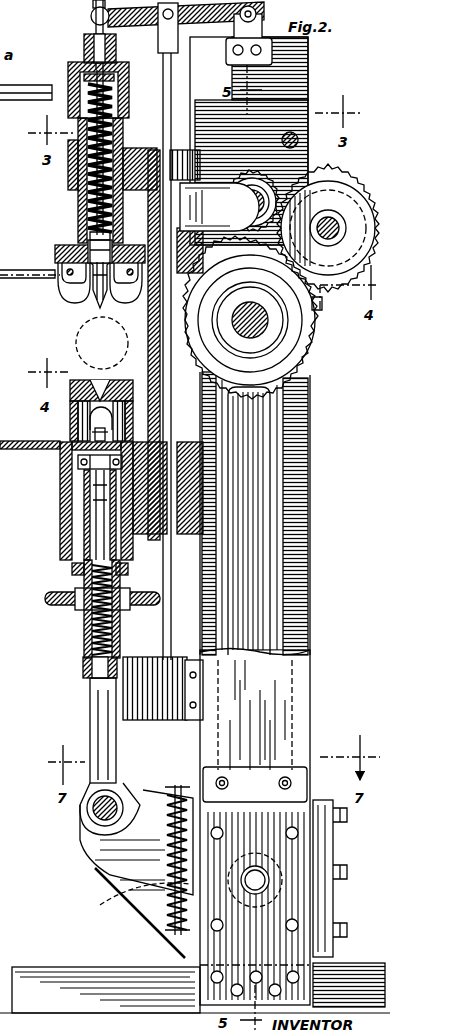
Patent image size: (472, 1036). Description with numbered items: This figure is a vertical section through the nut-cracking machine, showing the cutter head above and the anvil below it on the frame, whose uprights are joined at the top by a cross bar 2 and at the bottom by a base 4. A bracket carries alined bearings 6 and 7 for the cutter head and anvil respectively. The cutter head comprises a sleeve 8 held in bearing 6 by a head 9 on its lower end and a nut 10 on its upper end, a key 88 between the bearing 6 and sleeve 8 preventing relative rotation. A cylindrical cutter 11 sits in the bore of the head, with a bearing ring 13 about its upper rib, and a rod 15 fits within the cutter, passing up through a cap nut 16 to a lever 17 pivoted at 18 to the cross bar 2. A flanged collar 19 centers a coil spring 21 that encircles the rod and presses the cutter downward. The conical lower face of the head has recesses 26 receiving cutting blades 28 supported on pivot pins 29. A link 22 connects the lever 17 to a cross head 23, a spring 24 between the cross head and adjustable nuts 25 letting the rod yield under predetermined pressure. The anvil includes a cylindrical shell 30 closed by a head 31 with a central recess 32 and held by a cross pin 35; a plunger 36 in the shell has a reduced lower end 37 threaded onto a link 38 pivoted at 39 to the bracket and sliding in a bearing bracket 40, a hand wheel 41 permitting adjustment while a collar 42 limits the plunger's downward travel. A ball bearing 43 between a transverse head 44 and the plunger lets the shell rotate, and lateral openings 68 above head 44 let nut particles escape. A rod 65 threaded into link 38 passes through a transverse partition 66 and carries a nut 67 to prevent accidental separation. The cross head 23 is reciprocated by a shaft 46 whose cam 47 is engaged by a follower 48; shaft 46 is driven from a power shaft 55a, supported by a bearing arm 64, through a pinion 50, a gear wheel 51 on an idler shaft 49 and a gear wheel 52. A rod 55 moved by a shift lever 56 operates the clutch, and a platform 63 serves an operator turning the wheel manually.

The cross bar 2 is at (232, 44).
The base 4 is at (78, 975).
The bearing 6 is at (80, 195).
The bearing 7 is at (66, 505).
The sleeve 8 is at (136, 160).
The head 9 is at (88, 240).
The nut 10 is at (78, 168).
The cylindrical cutter 11 is at (95, 292).
The bearing ring 13 is at (88, 236).
The rod 15 is at (119, 52).
The cap nut 16 is at (90, 45).
The lever 17 is at (146, 22).
The pivot 18 is at (258, 14).
The flanged collar 19 is at (84, 72).
The coil spring 21 is at (118, 130).
The link 22 is at (166, 583).
The cross head 23 is at (108, 872).
The spring 24 is at (137, 903).
The adjustable stops or nuts 25 is at (165, 928).
The recesses 26 is at (58, 268).
The cutting blade 28 is at (80, 305).
The pivot pins 29 is at (90, 282).
The cylindrical shell 30 is at (70, 396).
The head 31 is at (78, 346).
The central recess 32 is at (102, 343).
The cross pin 35 is at (122, 352).
The plunger 36 is at (88, 484).
The reduced lower end 37 is at (85, 630).
The link 38 is at (78, 720).
The pivot 39 is at (96, 812).
The bearing bracket 40 is at (142, 660).
The hand wheel 41 is at (50, 600).
The collar 42 is at (72, 582).
The ball bearing 43 is at (80, 460).
The head 44 is at (95, 430).
The shaft 46 is at (258, 326).
The cam or eccentric 47 is at (262, 355).
The follower 48 is at (268, 480).
The idler shaft 49 is at (328, 228).
The pinion 50 is at (262, 188).
The gear wheel 51 is at (332, 222).
The gear wheel 52 is at (322, 308).
The rod 55 is at (284, 135).
The power shaft 55a is at (282, 176).
The shift lever 56 is at (20, 282).
The platform 63 is at (258, 770).
The bearing arm 64 is at (226, 165).
The rod 65 is at (98, 556).
The transverse partition 66 is at (90, 528).
The nut 67 is at (80, 490).
The lateral openings 68 is at (92, 418).
The key 88 is at (60, 258).